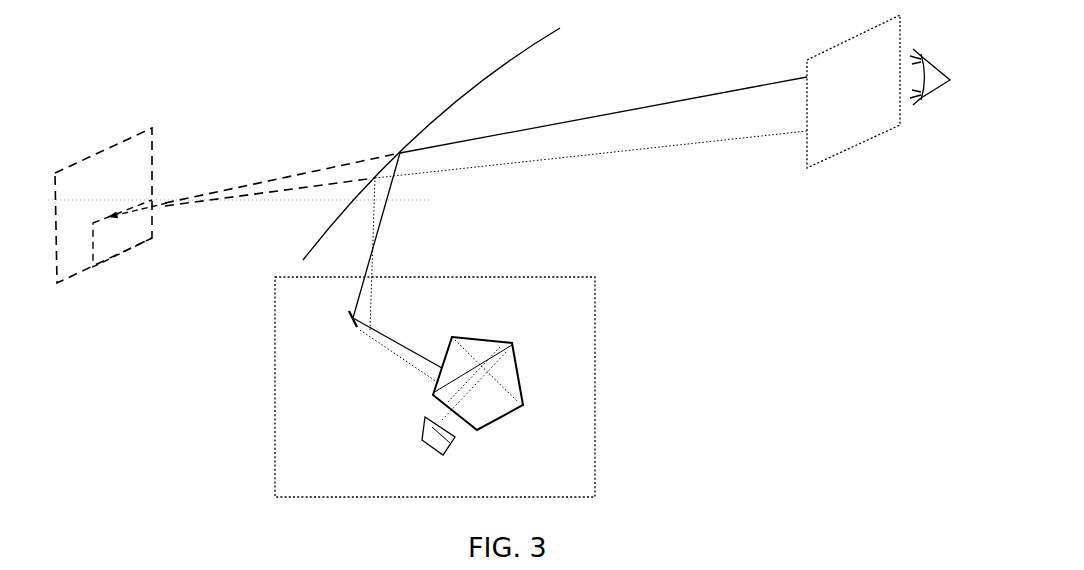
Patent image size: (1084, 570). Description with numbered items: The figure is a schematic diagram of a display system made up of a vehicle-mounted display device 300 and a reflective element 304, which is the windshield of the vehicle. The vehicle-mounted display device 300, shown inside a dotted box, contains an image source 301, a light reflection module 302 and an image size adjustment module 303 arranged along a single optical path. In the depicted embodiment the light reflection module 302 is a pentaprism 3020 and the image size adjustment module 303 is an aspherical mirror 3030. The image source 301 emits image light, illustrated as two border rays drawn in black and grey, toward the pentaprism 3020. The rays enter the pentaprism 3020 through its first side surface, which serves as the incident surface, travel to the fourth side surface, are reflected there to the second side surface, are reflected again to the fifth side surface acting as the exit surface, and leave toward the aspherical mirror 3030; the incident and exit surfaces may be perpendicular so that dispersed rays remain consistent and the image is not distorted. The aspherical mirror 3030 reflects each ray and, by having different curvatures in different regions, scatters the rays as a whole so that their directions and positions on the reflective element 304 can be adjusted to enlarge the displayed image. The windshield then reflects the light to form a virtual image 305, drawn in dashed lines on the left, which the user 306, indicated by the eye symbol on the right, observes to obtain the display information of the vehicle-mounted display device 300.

The vehicle-mounted display device 300 is at (478, 271).
The image source 301 is at (408, 445).
The light reflection module 302 is at (548, 309).
The pentaprism 3020 is at (437, 342).
The image size adjustment module 303 is at (349, 328).
The aspherical mirror 3030 is at (353, 319).
The reflective element 304 is at (540, 45).
The virtual image 305 is at (111, 216).
The user 306 is at (932, 112).